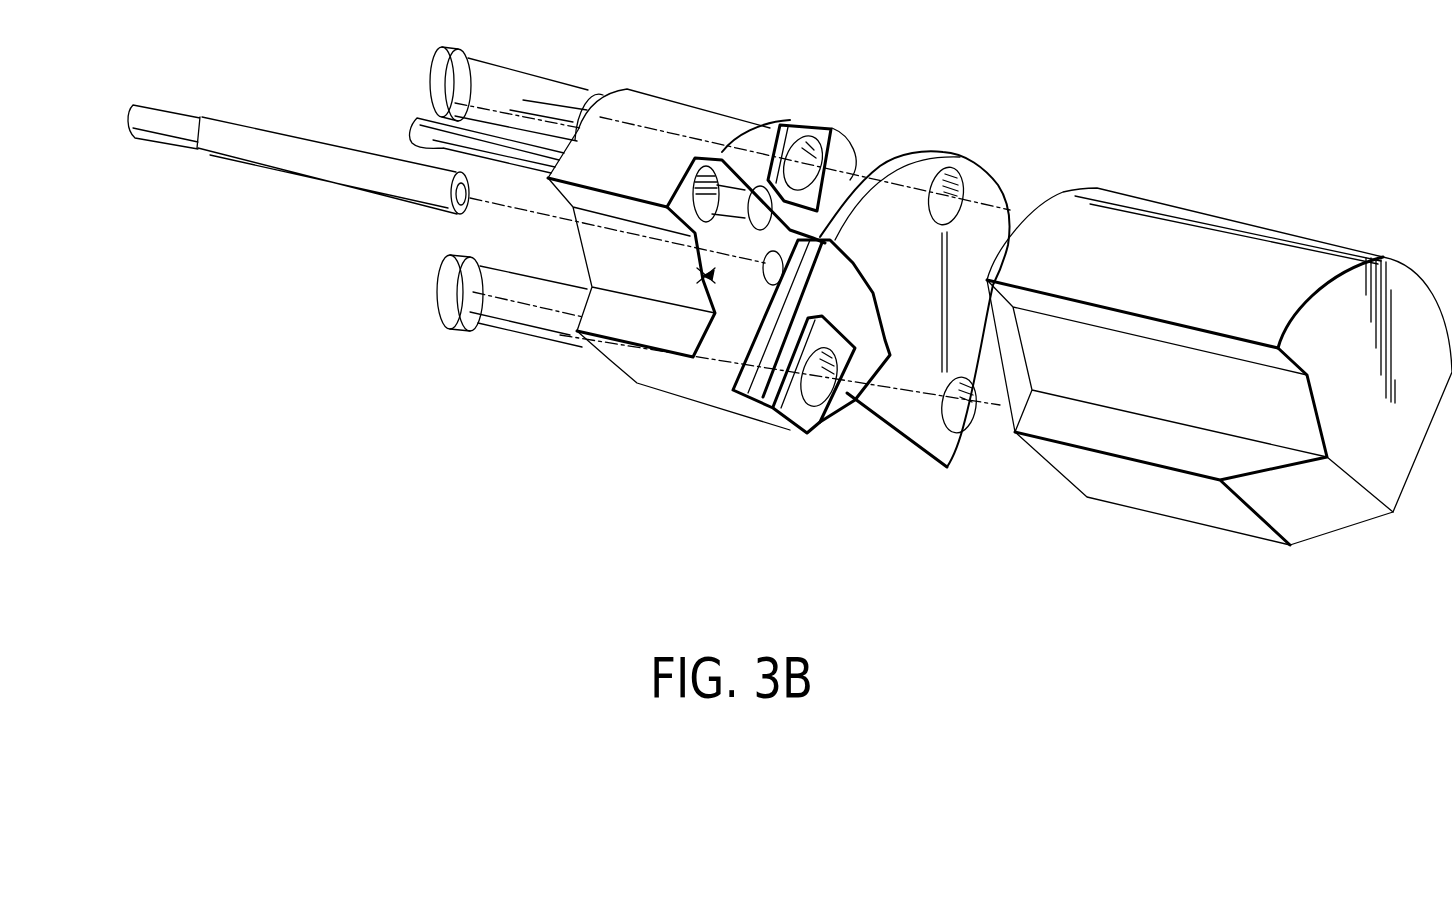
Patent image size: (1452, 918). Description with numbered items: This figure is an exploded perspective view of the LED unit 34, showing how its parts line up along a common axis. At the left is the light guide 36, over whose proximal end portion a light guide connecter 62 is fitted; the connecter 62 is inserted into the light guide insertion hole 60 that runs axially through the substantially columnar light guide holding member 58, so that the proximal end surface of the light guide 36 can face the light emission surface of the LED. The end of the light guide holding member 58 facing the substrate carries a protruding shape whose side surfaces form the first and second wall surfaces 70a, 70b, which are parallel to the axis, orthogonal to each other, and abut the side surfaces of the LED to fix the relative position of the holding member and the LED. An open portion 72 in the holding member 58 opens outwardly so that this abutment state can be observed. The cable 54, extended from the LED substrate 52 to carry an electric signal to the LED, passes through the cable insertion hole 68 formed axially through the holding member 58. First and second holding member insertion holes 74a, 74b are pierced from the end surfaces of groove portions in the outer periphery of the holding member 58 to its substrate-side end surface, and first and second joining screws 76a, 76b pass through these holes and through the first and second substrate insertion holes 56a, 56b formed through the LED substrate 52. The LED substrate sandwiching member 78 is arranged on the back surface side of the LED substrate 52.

The LED unit 34 is at (1060, 568).
The light guide 36 is at (165, 133).
The light guide connecter 62 is at (284, 160).
The cable 54 is at (420, 158).
The first joining screw 76a is at (552, 90).
The second joining screw 76b is at (523, 322).
The light guide holding member 58 is at (691, 393).
The light guide insertion hole 60 is at (764, 262).
The open portion 72 is at (703, 275).
The cable insertion hole 68 is at (692, 178).
The first wall surface 70a is at (787, 297).
The second wall surface 70b is at (736, 170).
The first holding member insertion hole 74a is at (820, 135).
The second holding member insertion hole 74b is at (814, 390).
The LED substrate 52 is at (930, 430).
The first substrate insertion hole 56a is at (968, 172).
The second substrate insertion hole 56b is at (960, 420).
The LED substrate sandwiching member 78 is at (1227, 243).